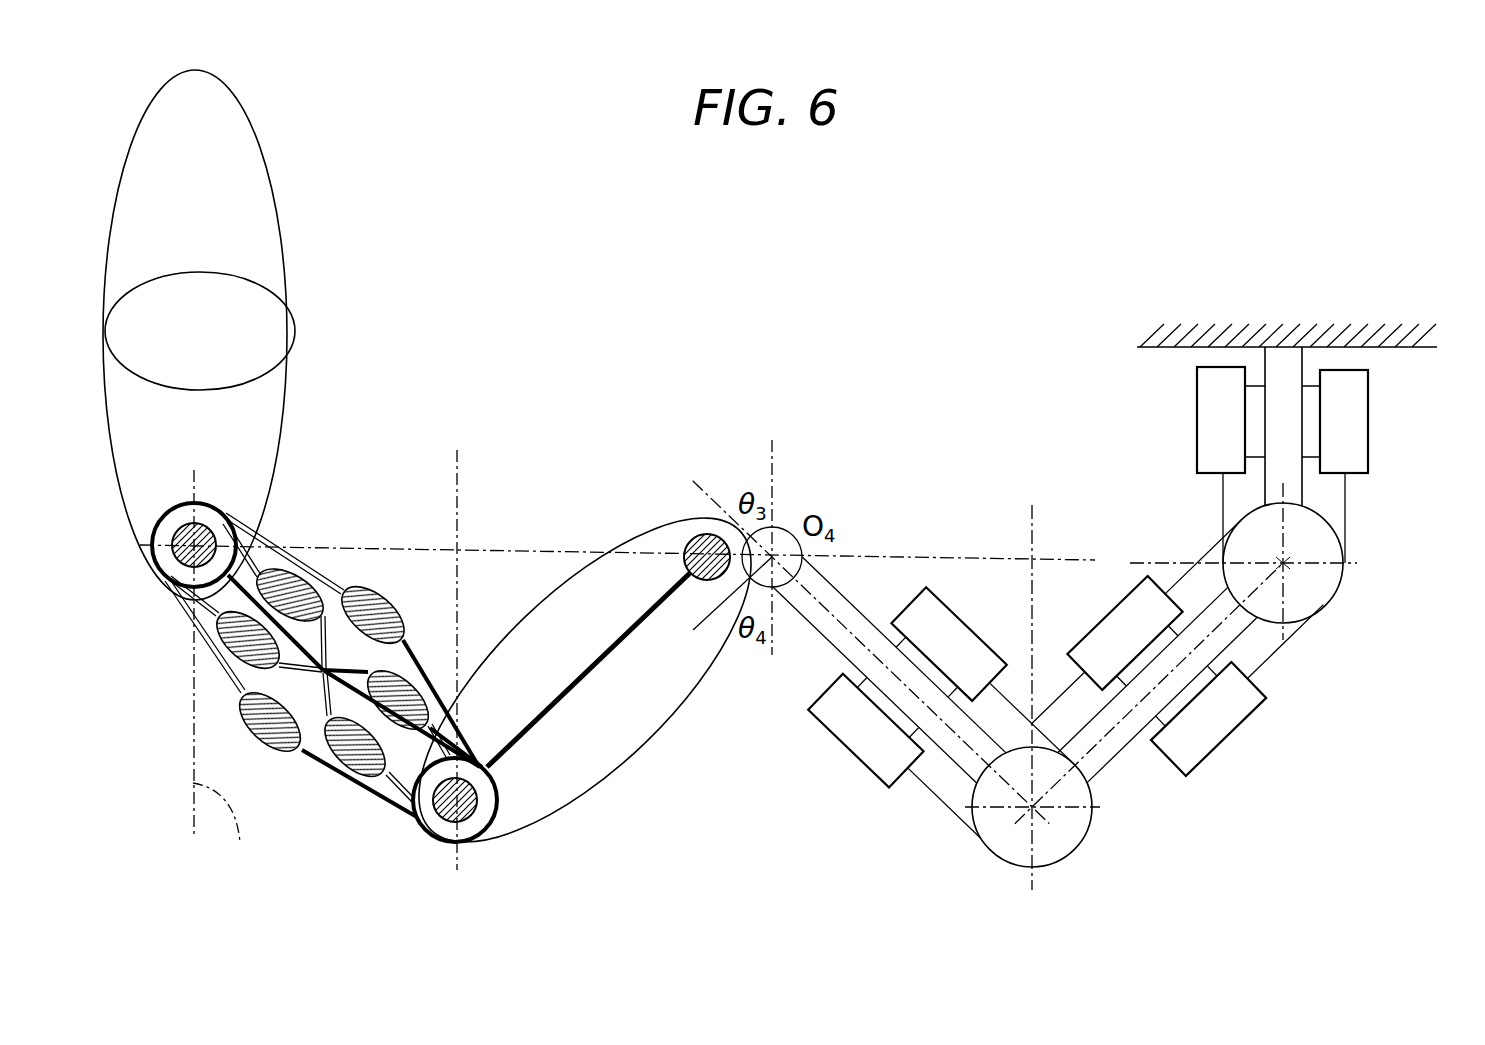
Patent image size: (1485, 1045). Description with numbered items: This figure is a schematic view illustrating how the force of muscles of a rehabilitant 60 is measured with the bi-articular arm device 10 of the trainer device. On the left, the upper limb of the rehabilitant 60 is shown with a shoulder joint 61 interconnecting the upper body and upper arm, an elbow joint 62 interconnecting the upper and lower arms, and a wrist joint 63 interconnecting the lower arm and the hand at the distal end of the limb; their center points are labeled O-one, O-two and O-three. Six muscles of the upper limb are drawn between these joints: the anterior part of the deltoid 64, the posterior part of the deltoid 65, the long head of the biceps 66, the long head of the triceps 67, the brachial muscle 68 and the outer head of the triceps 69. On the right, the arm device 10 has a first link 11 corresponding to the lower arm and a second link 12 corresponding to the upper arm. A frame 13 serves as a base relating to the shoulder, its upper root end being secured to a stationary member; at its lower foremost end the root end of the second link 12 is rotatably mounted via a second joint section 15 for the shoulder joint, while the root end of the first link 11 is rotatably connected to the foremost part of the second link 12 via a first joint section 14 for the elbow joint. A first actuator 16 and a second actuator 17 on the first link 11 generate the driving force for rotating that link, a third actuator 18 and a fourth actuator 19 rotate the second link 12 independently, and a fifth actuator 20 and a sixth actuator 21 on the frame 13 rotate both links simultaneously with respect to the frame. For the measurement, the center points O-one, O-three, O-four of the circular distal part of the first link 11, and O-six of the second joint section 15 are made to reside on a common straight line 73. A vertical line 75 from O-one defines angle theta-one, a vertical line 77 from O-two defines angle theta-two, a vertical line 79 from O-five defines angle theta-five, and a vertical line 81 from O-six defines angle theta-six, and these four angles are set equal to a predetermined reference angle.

The bi-articular arm device 10 is at (1420, 687).
The first link 11 is at (868, 622).
The second link 12 is at (1208, 606).
The frame 13 is at (1303, 490).
The first joint section 14 is at (1075, 856).
The second joint section 15 is at (1350, 563).
The first actuator 16 is at (983, 643).
The second actuator 17 is at (830, 730).
The third actuator 18 is at (1097, 622).
The fourth actuator 19 is at (1233, 740).
The fifth actuator 20 is at (1197, 415).
The sixth actuator 21 is at (1368, 415).
The rehabilitant 60 is at (254, 133).
The shoulder joint 61 is at (227, 513).
The elbow joint 62 is at (493, 828).
The wrist joint 63 is at (687, 542).
The anterior part of the deltoid 64 is at (307, 563).
The posterior part of the deltoid 65 is at (216, 643).
The caput longum of the biceps 66 is at (393, 603).
The caput longum of the triceps 67 is at (237, 712).
The brachial muscle 68 is at (420, 673).
The caput lateralis of the triceps 69 is at (350, 773).
The common straight line 73 is at (930, 555).
The vertical line from center point O1 75 is at (228, 830).
The vertical line from center point O2 77 is at (457, 498).
The vertical line from center point O5 79 is at (1034, 518).
The vertical line from center point O6 81 is at (1278, 559).